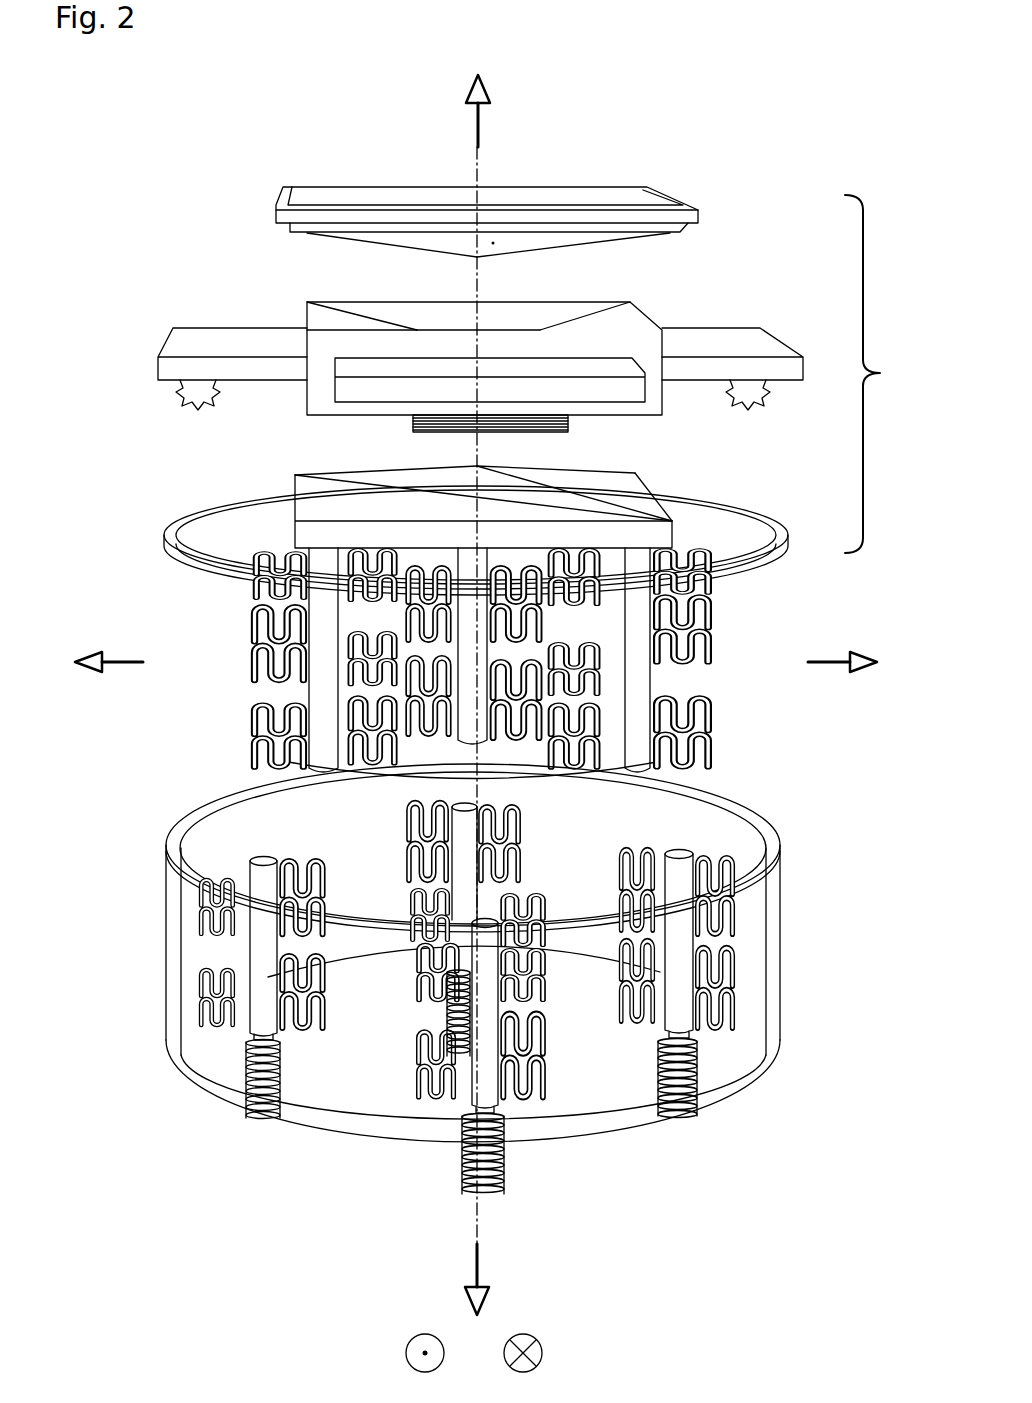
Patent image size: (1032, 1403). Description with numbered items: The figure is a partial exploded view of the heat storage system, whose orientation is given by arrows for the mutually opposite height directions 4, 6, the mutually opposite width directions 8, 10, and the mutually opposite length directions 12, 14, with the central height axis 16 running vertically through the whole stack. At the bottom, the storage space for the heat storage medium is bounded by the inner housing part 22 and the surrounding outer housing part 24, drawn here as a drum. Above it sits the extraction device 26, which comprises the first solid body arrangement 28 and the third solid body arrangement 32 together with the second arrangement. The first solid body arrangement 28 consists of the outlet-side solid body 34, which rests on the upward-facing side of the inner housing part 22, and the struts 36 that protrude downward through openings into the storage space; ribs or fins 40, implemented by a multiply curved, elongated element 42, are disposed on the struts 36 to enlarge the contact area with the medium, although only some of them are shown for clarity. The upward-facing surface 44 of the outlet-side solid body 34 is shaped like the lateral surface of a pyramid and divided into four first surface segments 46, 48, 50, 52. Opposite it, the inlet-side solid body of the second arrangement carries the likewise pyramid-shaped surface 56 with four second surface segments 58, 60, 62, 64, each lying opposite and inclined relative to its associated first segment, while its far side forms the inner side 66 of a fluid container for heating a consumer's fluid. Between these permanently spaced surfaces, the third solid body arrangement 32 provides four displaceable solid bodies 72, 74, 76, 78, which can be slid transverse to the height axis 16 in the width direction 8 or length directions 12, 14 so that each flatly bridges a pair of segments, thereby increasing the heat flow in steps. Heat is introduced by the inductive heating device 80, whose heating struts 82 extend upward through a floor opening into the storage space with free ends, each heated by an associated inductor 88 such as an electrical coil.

The height direction 4 is at (480, 130).
The height direction 6 is at (479, 1257).
The width direction 8 is at (115, 662).
The width direction 10 is at (843, 662).
The length direction 12 is at (540, 1340).
The length direction 14 is at (410, 1340).
The central height axis 16 is at (480, 170).
The inner housing part 22 is at (777, 557).
The outer housing part 24 is at (766, 508).
The extraction device 26 is at (881, 374).
The first solid body arrangement 28 is at (445, 372).
The third solid body arrangement 32 is at (480, 335).
The outlet-side solid body 34 is at (399, 485).
The struts 36 is at (639, 696).
The ribs or fins 40 is at (467, 963).
The multiply curved, elongated element 42 is at (110, 995).
The surface 44 is at (625, 493).
The first surface segment 46 is at (605, 488).
The first surface segment 48 is at (516, 504).
The first surface segment 50 is at (337, 488).
The first surface segment 52 is at (385, 470).
The surface 56 is at (643, 242).
The second surface segment 58 is at (597, 245).
The second surface segment 60 is at (493, 243).
The second surface segment 62 is at (350, 238).
The second surface segment 64 is at (413, 202).
The inner side 66 is at (628, 203).
The displaceable solid body 72 is at (607, 320).
The displaceable solid body 74 is at (378, 348).
The displaceable solid body 76 is at (338, 322).
The displaceable solid body 78 is at (492, 315).
The heating device 80 is at (485, 1022).
The heating struts 82 is at (462, 889).
The inductor 88 is at (735, 1233).